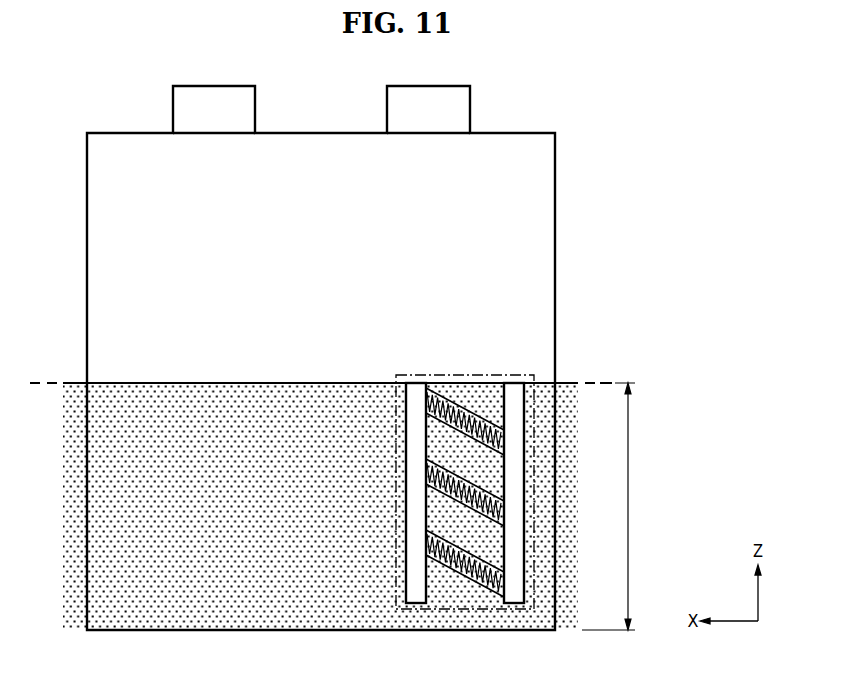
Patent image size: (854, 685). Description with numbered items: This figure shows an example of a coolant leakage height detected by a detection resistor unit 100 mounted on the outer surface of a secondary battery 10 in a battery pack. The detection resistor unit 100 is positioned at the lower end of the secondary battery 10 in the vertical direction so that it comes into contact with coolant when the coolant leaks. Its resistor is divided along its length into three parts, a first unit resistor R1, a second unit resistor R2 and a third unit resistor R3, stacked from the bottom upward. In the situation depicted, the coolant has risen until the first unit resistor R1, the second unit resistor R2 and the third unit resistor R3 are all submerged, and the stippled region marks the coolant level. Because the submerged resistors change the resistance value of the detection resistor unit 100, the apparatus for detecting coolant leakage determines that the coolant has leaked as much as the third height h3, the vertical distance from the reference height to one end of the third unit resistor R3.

The secondary battery 10 is at (557, 198).
The detection resistor unit 100 is at (465, 473).
The first unit resistor R1 is at (465, 564).
The second unit resistor R2 is at (465, 492).
The third unit resistor R3 is at (465, 421).
The third height h3 is at (619, 506).